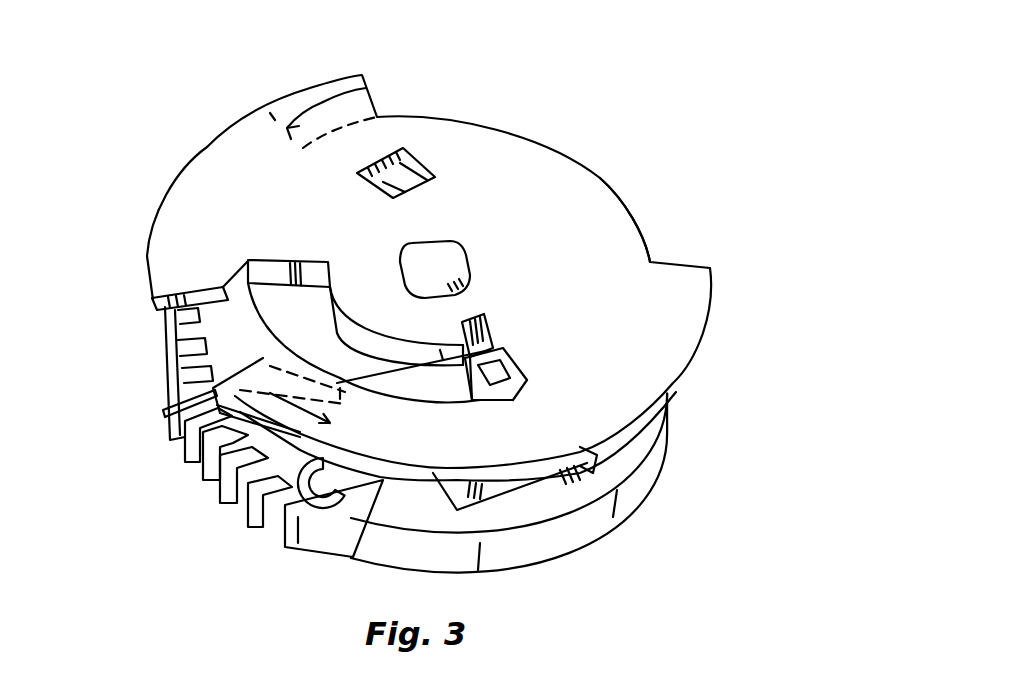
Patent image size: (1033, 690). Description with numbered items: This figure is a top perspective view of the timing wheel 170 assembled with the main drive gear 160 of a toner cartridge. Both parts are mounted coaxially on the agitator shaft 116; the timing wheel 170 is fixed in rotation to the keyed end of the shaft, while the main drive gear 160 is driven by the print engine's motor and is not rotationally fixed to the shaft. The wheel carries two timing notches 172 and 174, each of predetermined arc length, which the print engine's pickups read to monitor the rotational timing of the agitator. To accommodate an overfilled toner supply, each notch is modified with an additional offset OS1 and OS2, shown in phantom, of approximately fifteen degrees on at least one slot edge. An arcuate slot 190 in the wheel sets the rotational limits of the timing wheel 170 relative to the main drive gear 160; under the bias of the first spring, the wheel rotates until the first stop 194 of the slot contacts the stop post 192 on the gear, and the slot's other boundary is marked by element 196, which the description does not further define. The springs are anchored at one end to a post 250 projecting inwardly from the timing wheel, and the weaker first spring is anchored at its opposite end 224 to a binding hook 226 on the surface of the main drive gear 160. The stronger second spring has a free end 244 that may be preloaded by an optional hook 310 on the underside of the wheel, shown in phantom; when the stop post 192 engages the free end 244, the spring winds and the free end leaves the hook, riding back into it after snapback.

The additional offset OS2 is at (323, 103).
The post 250 is at (407, 150).
The timing wheel 170 is at (230, 185).
The agitator shaft 116 is at (453, 247).
The notch 174 is at (640, 207).
The hatched stop block 196 is at (287, 260).
The arcuate slot 190 is at (262, 279).
The first stop 194 is at (497, 333).
The stop post 192 is at (503, 377).
The notch 172 is at (195, 333).
The hook 310 is at (348, 416).
The free end 244 is at (163, 417).
The additional offset OS1 is at (203, 462).
The opposite end 224 is at (280, 527).
The binding hook 226 is at (337, 563).
The main drive gear 160 is at (583, 543).